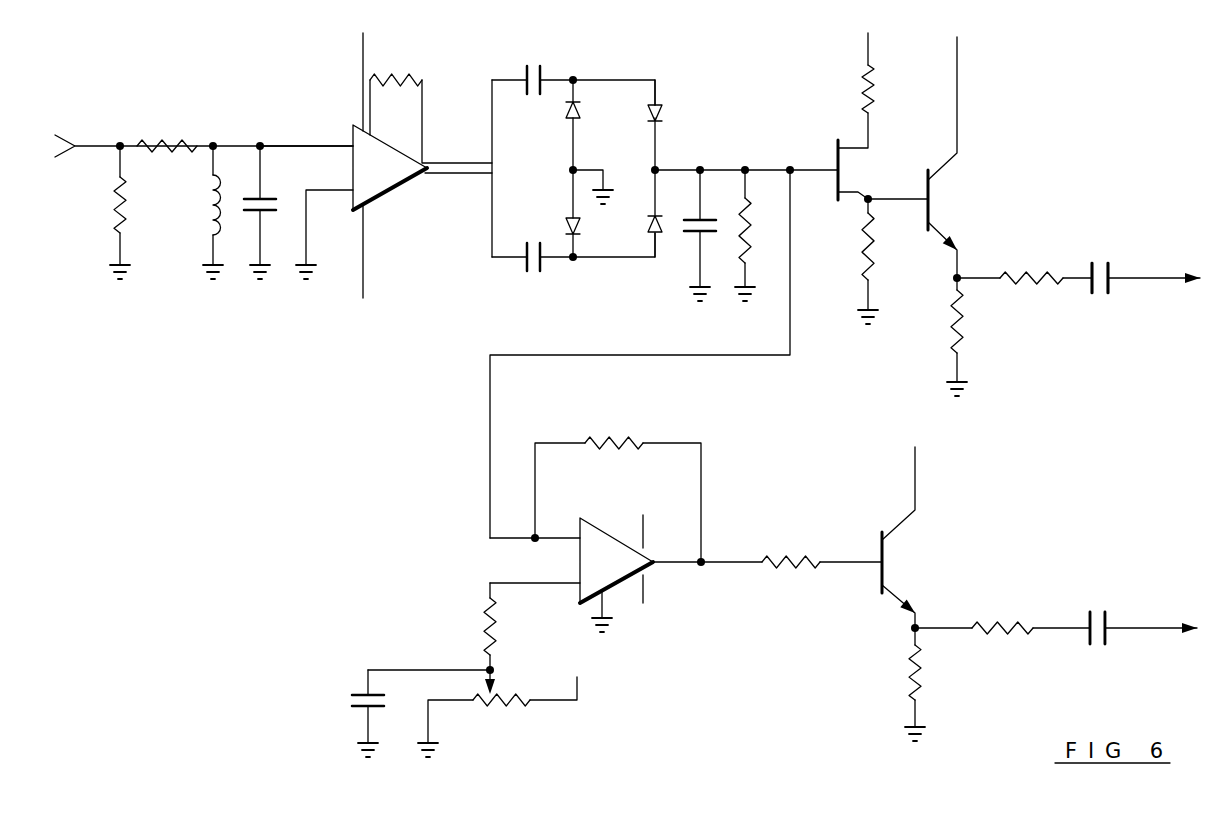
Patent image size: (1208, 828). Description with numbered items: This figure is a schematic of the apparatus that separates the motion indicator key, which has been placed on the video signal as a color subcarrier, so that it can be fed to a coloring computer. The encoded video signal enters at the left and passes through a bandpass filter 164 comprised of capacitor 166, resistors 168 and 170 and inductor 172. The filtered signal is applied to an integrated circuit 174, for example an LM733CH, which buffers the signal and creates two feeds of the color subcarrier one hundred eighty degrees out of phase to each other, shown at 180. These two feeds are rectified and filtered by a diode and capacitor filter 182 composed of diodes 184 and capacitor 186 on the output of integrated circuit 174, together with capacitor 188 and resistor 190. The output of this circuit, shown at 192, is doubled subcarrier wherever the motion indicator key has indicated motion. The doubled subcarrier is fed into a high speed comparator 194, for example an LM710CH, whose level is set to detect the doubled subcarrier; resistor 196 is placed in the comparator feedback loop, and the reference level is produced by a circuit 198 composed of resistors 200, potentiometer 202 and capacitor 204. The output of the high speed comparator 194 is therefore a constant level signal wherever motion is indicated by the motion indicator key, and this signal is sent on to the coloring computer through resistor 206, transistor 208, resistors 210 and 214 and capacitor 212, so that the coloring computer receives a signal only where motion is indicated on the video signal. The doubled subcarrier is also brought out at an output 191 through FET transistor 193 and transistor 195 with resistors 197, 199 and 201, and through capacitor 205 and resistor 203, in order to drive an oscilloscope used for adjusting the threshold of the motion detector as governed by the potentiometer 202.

The bandpass filter 164 is at (315, 146).
The capacitor 166 is at (277, 199).
The resistor 168 is at (158, 143).
The resistor 170 is at (118, 226).
The inductor 172 is at (211, 220).
The integrated circuit 174 is at (393, 176).
The two feeds of the color subcarrier 180 is at (465, 176).
The diode and capacitor filter 182 is at (633, 80).
The diode 184 is at (567, 118).
The capacitor 186 is at (540, 68).
The capacitor 188 is at (686, 233).
The resistor 190 is at (740, 200).
The output 191 is at (1148, 278).
The output of the circuit 192 is at (768, 170).
The FET transistor 193 is at (853, 193).
The high speed comparator 194 is at (620, 569).
The transistor 195 is at (937, 235).
The resistor 196 is at (633, 441).
The resistor 197 is at (868, 70).
The circuit 198 is at (438, 668).
The resistor 199 is at (862, 250).
The resistor 200 is at (500, 631).
The resistor 201 is at (950, 325).
The potentiometer 202 is at (502, 703).
The resistor 203 is at (1025, 284).
The capacitor 204 is at (357, 695).
The capacitor 205 is at (1110, 293).
The resistor 206 is at (781, 557).
The transistor 208 is at (897, 526).
The resistor 210 is at (1000, 633).
The capacitor 212 is at (1105, 645).
The resistor 214 is at (906, 688).